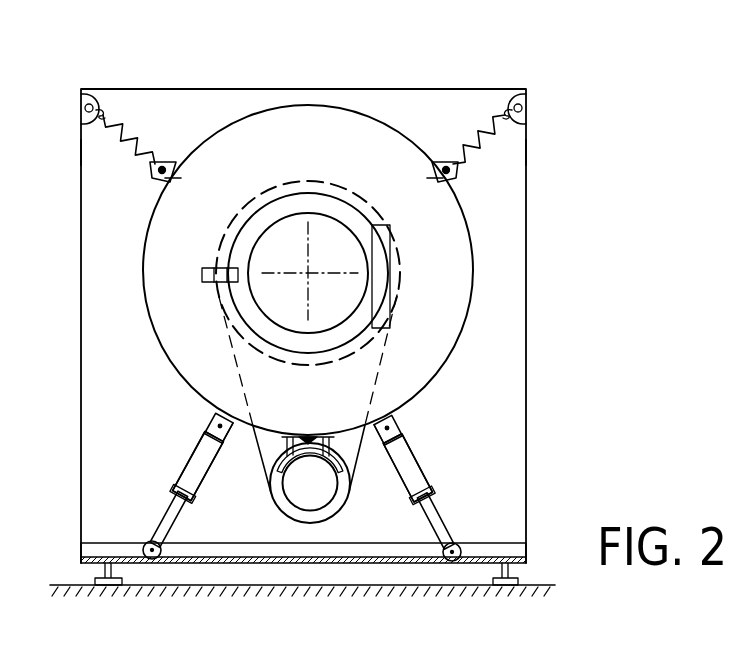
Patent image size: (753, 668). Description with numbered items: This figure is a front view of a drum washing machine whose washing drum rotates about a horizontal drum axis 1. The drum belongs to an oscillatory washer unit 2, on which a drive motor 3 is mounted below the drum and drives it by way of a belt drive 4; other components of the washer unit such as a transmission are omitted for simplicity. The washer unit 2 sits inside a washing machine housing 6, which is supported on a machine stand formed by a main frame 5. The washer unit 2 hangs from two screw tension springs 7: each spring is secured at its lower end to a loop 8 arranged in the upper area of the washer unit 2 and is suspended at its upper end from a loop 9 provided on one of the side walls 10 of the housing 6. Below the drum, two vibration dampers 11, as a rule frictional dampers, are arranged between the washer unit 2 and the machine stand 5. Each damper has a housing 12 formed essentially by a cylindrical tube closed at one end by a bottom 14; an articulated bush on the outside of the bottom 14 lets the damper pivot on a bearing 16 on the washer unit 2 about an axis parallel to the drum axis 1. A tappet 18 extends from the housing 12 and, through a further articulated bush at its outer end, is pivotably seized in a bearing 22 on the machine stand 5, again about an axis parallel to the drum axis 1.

The drum axis 1 is at (311, 271).
The oscillatory washer unit 2 is at (299, 104).
The drive motor 3 is at (317, 495).
The belt drive 4 is at (382, 363).
The main frame 5 is at (80, 548).
The washing machine housing 6 is at (528, 255).
The screw tension springs 7 is at (118, 130).
The loops 8 is at (163, 160).
The loops 9 is at (84, 96).
The side walls 10 is at (81, 152).
The vibration dampers 11 is at (172, 472).
The housing 12 is at (207, 455).
The bottom 14 is at (226, 438).
The bearing 16 is at (222, 423).
The tappet 18 is at (168, 522).
The bearing 22 is at (148, 565).